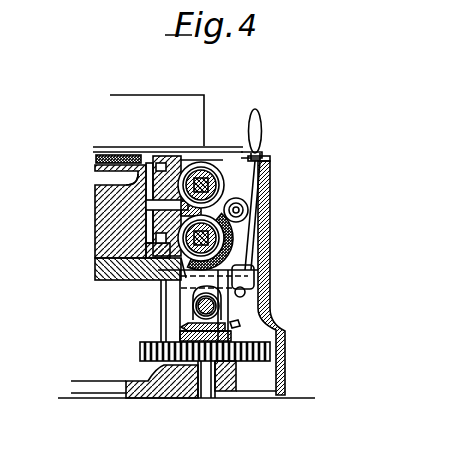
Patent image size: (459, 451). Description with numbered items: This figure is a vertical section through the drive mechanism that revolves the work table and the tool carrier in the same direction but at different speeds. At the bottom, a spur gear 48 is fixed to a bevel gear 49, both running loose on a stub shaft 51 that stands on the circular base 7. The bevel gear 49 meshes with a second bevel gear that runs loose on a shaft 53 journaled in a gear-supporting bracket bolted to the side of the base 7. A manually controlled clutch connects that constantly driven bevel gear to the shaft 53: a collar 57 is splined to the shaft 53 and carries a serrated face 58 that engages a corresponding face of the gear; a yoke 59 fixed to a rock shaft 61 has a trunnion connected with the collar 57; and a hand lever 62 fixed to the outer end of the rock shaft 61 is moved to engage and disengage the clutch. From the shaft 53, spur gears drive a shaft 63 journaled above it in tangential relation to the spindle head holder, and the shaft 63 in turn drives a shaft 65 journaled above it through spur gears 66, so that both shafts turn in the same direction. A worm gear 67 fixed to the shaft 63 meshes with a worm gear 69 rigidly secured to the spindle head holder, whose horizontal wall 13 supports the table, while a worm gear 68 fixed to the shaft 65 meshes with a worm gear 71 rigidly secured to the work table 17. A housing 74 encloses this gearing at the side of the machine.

The work table 17 is at (157, 120).
The horizontal wall 13 is at (97, 157).
The worm gear 68 is at (203, 156).
The hand lever 62 is at (254, 120).
The spur gears 66 is at (225, 191).
The worm gear 67 is at (200, 232).
The rock shaft 61 is at (246, 278).
The worm gear 71 is at (138, 182).
The shaft 65 is at (138, 192).
The worm gear 69 is at (138, 220).
The shaft 63 is at (120, 228).
The yoke 59 is at (190, 293).
The collar 57 is at (182, 302).
The shaft 53 is at (178, 320).
The serrated face 58 is at (243, 320).
The bevel gear 49 is at (222, 323).
The spur gear 48 is at (262, 341).
The housing 74 is at (277, 368).
The circular base 7 is at (98, 375).
The stub shaft 51 is at (203, 388).